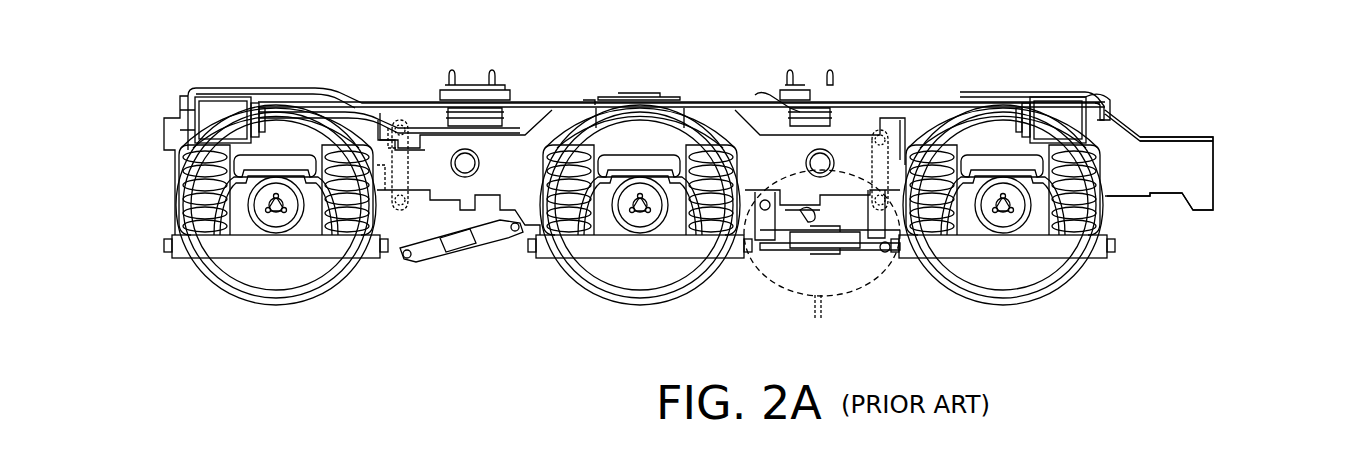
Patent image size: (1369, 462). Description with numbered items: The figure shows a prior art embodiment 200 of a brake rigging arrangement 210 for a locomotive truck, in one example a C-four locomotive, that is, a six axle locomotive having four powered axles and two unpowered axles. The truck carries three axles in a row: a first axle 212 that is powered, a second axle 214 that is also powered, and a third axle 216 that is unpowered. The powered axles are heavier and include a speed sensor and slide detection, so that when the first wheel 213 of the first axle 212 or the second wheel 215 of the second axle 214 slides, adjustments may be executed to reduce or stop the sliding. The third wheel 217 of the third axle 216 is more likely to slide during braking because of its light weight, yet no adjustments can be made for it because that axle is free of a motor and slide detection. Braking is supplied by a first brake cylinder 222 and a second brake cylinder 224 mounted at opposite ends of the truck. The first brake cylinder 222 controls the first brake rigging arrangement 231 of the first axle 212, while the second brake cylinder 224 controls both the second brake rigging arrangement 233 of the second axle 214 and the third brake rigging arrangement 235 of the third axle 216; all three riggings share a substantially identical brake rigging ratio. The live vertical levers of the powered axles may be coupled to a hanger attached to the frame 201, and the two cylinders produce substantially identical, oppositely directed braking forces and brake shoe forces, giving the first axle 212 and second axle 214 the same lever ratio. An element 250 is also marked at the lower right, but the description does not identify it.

The embodiment 200 is at (1292, 78).
The frame 201 is at (1189, 212).
The brake rigging arrangement 210 is at (1135, 86).
The first axle 212 is at (252, 225).
The first wheel 213 is at (278, 303).
The second axle 214 is at (1005, 229).
The second wheel 215 is at (1074, 272).
The third axle 216 is at (619, 224).
The third wheel 217 is at (561, 265).
The first brake cylinder 222 is at (228, 97).
The second brake cylinder 224 is at (1044, 95).
The first brake rigging arrangement 231 is at (399, 108).
The second brake rigging arrangement 233 is at (907, 104).
The third brake rigging arrangement 235 is at (740, 130).
The rail 250 is at (1333, 459).